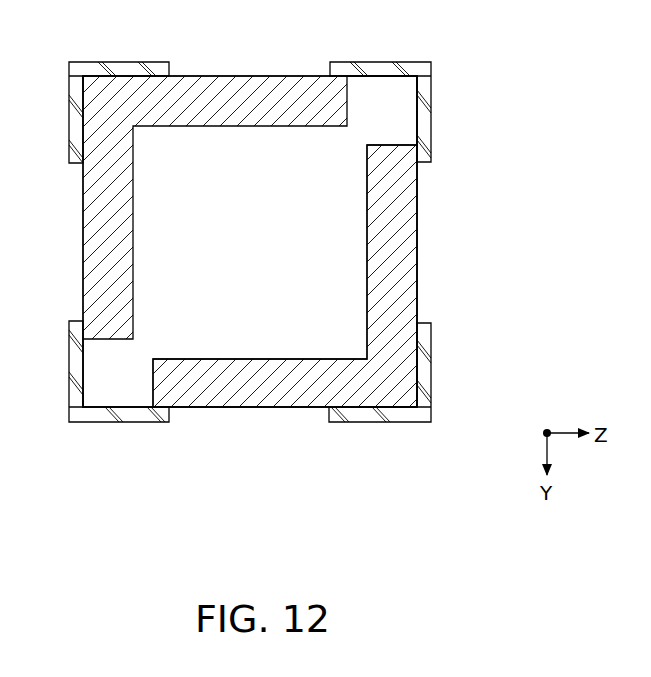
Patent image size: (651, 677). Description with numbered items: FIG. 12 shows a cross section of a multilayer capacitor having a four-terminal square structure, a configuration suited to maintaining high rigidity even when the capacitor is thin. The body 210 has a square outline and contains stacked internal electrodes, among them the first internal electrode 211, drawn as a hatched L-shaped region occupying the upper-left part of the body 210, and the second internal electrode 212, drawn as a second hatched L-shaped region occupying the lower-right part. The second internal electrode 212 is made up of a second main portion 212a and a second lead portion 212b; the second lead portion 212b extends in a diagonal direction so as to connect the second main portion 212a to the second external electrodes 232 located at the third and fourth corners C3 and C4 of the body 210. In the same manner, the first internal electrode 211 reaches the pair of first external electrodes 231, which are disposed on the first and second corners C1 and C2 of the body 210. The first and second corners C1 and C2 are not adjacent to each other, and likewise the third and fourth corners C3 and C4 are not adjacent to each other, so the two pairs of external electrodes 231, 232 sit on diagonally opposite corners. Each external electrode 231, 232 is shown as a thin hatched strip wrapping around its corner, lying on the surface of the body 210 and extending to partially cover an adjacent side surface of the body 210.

The body 210 is at (291, 70).
The first internal electrode 211 is at (194, 88).
The second internal electrode 212 is at (527, 113).
The second main portion 212a is at (348, 205).
The second lead portion 212b is at (392, 124).
The first external electrode 231 is at (118, 68).
The second external electrode 232 is at (378, 68).
The first corner C1 is at (78, 72).
The second corner C2 is at (422, 404).
The third corner C3 is at (78, 404).
The fourth corner C4 is at (422, 72).